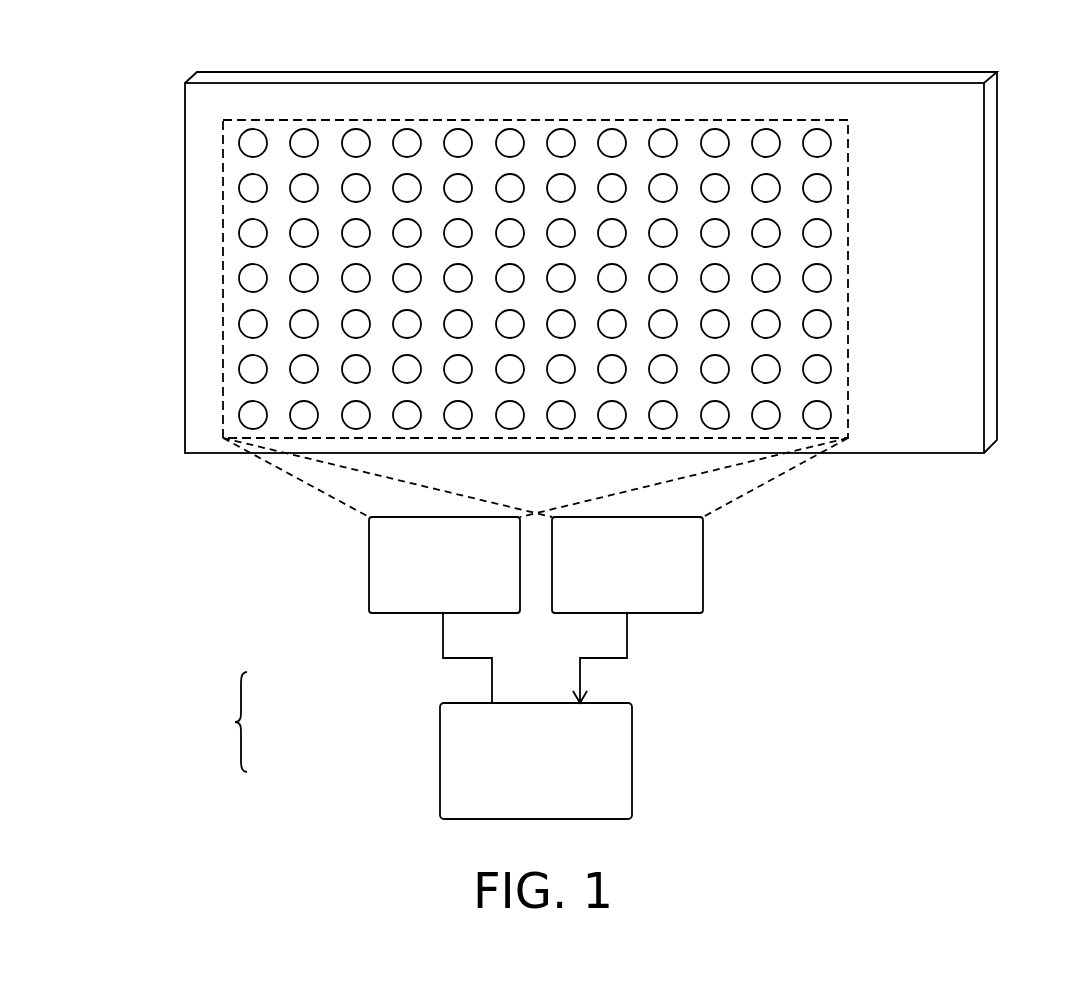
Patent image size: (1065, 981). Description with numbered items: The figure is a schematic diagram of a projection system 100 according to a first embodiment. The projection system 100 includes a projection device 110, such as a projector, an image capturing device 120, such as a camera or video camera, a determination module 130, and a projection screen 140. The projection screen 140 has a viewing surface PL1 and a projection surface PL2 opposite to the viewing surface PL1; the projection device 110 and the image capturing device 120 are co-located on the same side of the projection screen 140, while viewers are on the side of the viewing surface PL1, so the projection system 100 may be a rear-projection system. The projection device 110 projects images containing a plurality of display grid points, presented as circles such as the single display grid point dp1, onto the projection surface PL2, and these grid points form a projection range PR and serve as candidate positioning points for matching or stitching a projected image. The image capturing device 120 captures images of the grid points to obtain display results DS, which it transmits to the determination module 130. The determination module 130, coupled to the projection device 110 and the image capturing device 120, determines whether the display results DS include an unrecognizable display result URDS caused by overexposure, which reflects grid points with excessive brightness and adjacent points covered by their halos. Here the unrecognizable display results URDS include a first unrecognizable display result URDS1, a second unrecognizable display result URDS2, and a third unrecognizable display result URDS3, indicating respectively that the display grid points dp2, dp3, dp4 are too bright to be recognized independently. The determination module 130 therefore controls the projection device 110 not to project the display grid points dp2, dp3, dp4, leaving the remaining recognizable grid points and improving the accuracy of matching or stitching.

The projection system 100 is at (821, 819).
The projection device 110 is at (369, 556).
The image capturing device 120 is at (703, 556).
The determination module 130 is at (632, 757).
The projection screen 140 is at (584, 244).
The viewing surface PL1 is at (945, 72).
The projection surface PL2 is at (906, 85).
The projection range PR is at (848, 412).
The display grid point dp1 is at (246, 131).
The display grid point dp2 is at (612, 324).
The display grid point dp3 is at (612, 369).
The display grid point dp4 is at (612, 415).
The display results DS is at (600, 658).
The unrecognizable display result URDS is at (212, 722).
The first unrecognizable display result URDS1 is at (284, 695).
The second unrecognizable display result URDS2 is at (284, 727).
The third unrecognizable display result URDS3 is at (284, 758).